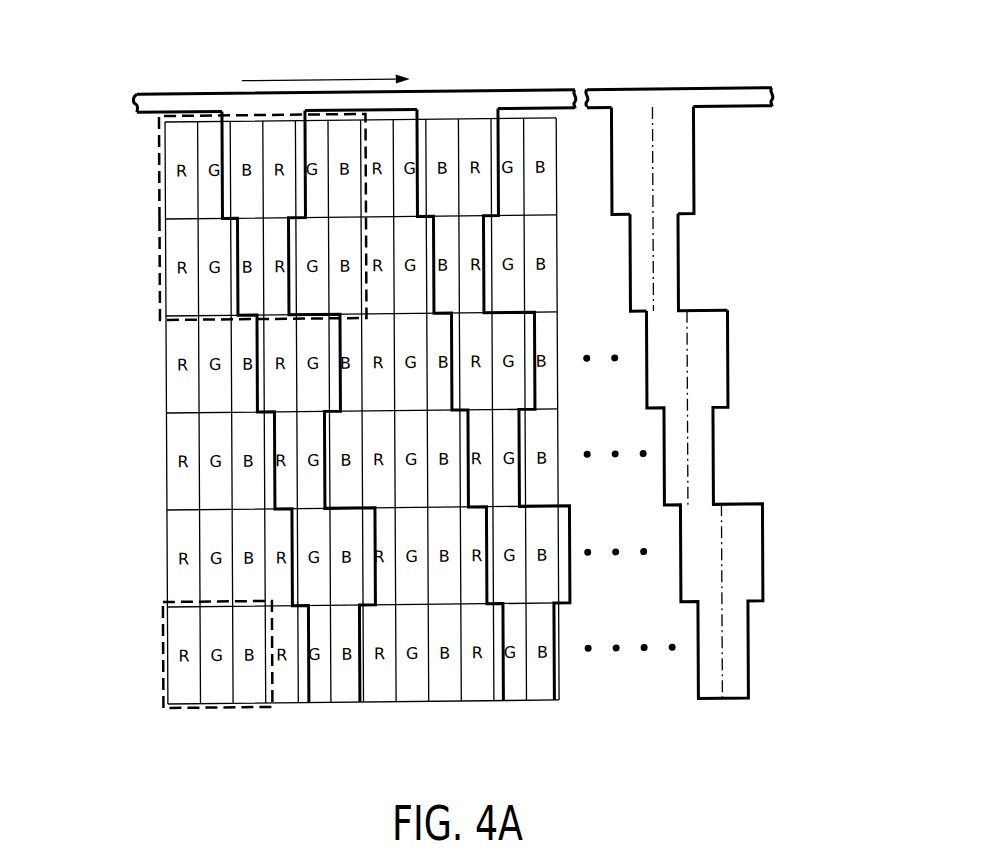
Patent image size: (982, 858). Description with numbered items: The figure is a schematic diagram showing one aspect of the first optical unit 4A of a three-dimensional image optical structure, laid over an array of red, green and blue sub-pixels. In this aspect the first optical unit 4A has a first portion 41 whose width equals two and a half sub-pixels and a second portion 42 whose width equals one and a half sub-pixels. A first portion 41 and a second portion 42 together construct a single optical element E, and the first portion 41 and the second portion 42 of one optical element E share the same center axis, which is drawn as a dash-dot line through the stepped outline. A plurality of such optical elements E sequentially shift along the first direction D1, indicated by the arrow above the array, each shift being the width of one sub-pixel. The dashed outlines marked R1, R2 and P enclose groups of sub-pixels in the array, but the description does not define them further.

The first optical unit 4A is at (672, 107).
The first portion 41 is at (694, 170).
The second portion 42 is at (678, 263).
The optical element E is at (722, 402).
The first pixel row R1 is at (159, 168).
The second pixel row R2 is at (159, 271).
The pixel P is at (161, 655).
The first direction D1 is at (326, 66).